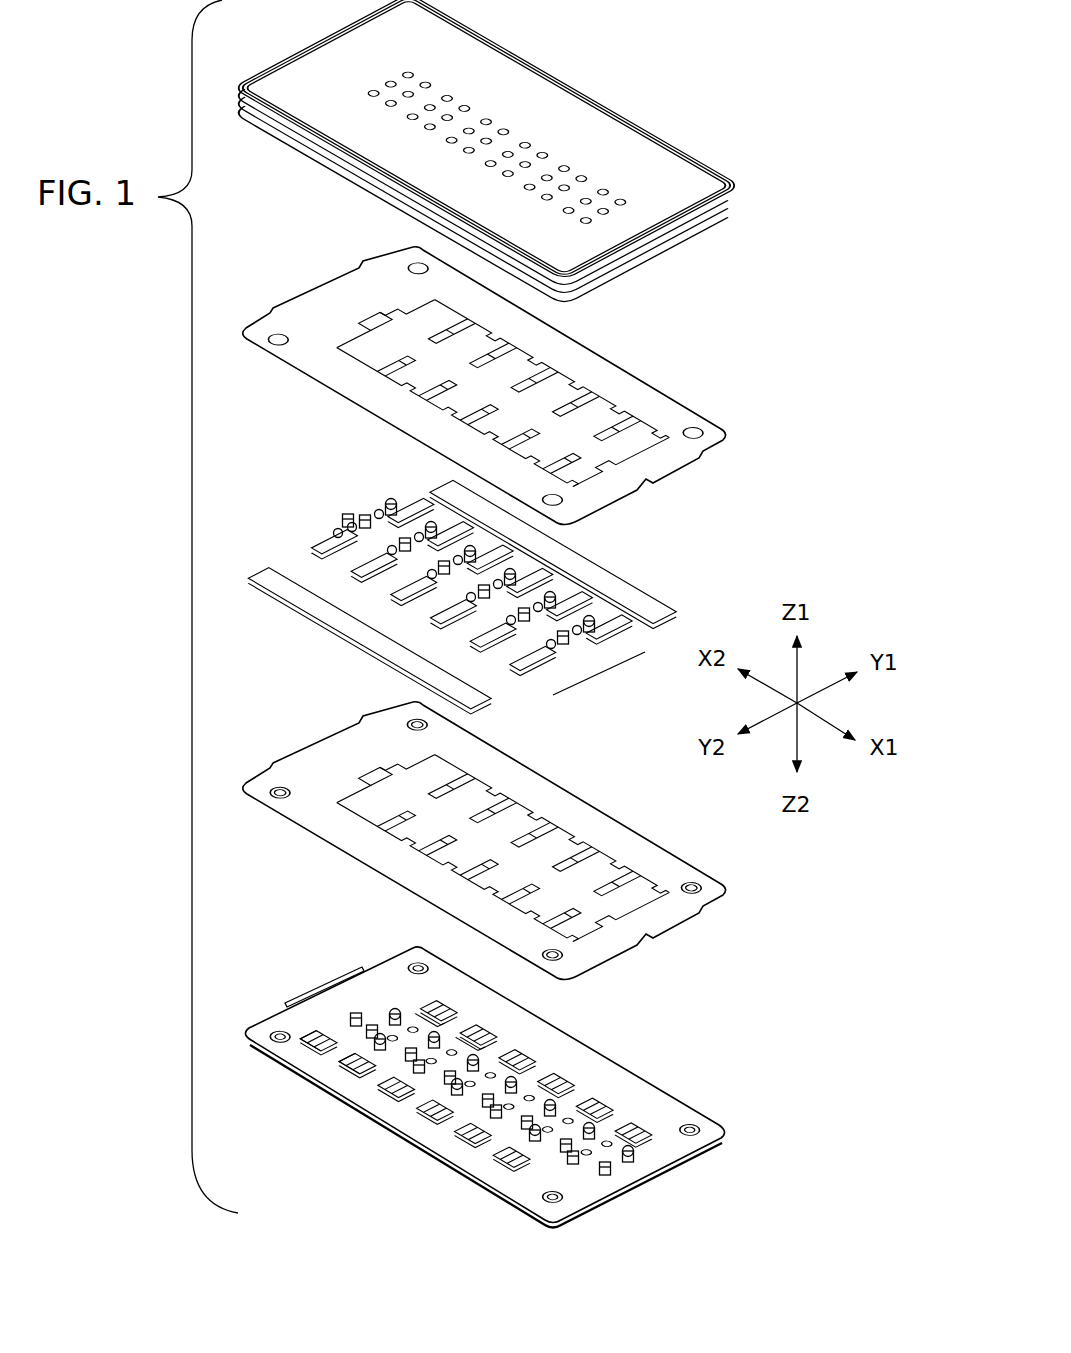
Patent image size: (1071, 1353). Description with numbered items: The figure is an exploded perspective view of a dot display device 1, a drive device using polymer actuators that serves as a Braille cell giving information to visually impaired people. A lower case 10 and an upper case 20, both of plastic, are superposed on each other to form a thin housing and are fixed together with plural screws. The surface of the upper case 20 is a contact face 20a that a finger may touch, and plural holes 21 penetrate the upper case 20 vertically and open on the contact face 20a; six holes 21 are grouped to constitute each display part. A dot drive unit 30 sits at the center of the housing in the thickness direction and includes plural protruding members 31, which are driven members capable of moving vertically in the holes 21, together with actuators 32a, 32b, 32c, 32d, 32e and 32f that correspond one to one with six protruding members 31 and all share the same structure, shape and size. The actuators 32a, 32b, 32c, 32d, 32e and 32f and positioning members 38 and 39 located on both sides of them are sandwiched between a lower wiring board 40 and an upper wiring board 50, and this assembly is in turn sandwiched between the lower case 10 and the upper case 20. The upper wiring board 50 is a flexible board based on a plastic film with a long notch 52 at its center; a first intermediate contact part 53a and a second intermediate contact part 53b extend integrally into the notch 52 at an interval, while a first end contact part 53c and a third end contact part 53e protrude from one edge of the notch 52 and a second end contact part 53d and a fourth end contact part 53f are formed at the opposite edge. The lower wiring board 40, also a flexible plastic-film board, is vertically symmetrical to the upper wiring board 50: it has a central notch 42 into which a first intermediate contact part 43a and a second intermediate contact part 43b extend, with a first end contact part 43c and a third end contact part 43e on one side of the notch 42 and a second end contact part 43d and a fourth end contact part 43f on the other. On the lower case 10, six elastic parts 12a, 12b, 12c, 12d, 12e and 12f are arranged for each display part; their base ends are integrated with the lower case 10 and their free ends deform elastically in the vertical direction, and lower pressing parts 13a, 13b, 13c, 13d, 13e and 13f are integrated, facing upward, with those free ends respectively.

The dot display device 1 is at (662, 114).
The lower case 10 is at (477, 1065).
The elastic part 12a is at (489, 1100).
The elastic part 12b is at (473, 1063).
The elastic part 12c is at (531, 1097).
The elastic part 12d is at (489, 1100).
The elastic part 12e is at (458, 1088).
The elastic part 12f is at (465, 1088).
The lower pressing part 13a is at (415, 1099).
The lower pressing part 13b is at (430, 1018).
The lower pressing part 13c is at (536, 1072).
The lower pressing part 13d is at (318, 1041).
The lower pressing part 13e is at (357, 1063).
The lower pressing part 13f is at (471, 1042).
The upper case 20 is at (547, 152).
The contact face 20a is at (528, 85).
The hole 21 is at (428, 84).
The dot drive unit 30 is at (434, 571).
The protruding member 31 is at (344, 526).
The actuator 32a is at (434, 600).
The actuator 32b is at (464, 579).
The actuator 32c is at (490, 566).
The actuator 32d is at (472, 589).
The actuator 32e is at (510, 568).
The actuator 32f is at (465, 579).
The positioning member 38 is at (656, 600).
The positioning member 39 is at (290, 608).
The lower wiring board 40 is at (514, 841).
The notch 42 is at (617, 914).
The first intermediate contact part 43a is at (479, 869).
The second intermediate contact part 43b is at (534, 835).
The first end contact part 43c is at (549, 825).
The second end contact part 43d is at (458, 871).
The third end contact part 43e is at (380, 774).
The fourth end contact part 43f is at (375, 776).
The upper wiring board 50 is at (510, 390).
The notch 52 is at (617, 459).
The first intermediate contact part 53a is at (479, 414).
The second intermediate contact part 53b is at (534, 380).
The first end contact part 53c is at (549, 370).
The second end contact part 53d is at (458, 416).
The third end contact part 53e is at (380, 319).
The fourth end contact part 53f is at (375, 321).